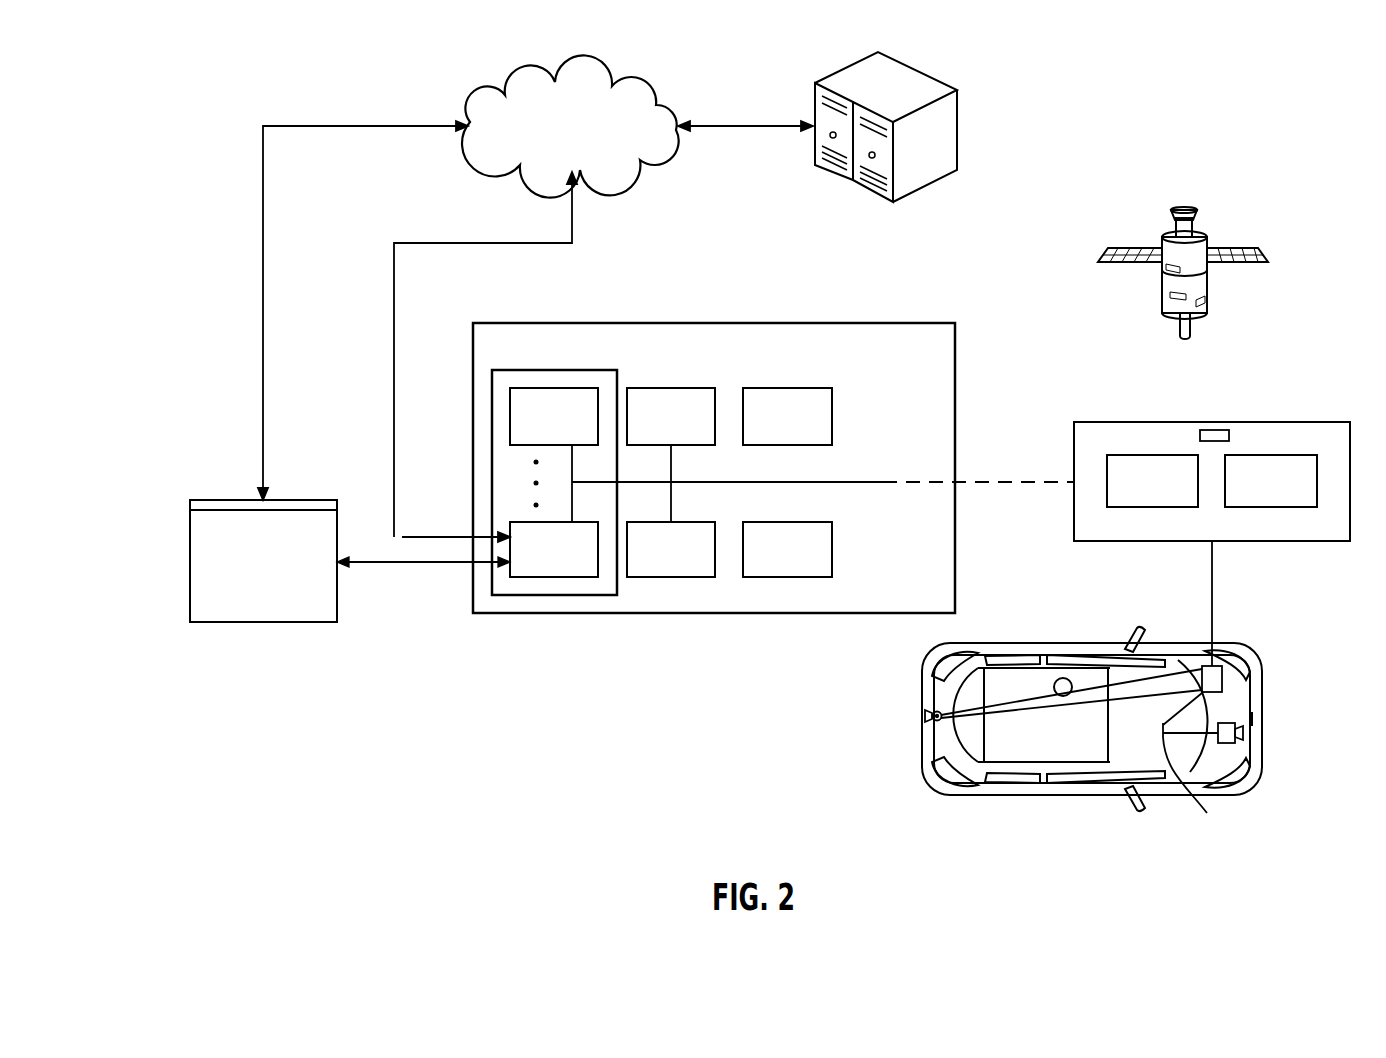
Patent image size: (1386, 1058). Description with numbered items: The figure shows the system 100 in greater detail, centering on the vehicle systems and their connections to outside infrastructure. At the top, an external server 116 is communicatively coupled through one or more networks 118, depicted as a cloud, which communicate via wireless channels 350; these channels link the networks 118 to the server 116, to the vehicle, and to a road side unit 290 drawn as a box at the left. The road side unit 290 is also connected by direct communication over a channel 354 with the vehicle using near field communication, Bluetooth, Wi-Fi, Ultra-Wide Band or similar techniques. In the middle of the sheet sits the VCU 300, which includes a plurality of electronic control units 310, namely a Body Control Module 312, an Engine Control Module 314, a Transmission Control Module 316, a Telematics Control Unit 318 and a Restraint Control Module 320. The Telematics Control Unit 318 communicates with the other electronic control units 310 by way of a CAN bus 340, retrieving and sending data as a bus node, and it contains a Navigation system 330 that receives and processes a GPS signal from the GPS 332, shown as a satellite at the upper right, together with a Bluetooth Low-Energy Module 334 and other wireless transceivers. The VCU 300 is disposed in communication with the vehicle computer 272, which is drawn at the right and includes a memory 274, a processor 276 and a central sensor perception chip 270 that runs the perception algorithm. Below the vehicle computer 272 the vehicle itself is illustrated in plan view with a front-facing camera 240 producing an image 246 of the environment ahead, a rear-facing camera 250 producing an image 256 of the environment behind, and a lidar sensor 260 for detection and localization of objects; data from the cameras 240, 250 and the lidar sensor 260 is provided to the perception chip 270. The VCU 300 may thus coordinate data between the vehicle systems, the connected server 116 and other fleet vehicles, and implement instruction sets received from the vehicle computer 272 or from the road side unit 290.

The system 100 is at (1087, 741).
The server 116 is at (962, 74).
The network 118 is at (596, 143).
The camera 240 is at (1246, 734).
The image 246 is at (1197, 772).
The camera 250 is at (932, 716).
The image 256 is at (948, 712).
The lidar sensor 260 is at (1063, 677).
The perception chip 270 is at (1216, 429).
The vehicle computer 272 is at (1212, 524).
The memory 274 is at (1293, 495).
The processor 276 is at (1175, 495).
The road side unit 290 is at (213, 558).
The VCU 300 is at (542, 322).
The electronic control units 310 is at (783, 462).
The Body Control Module 312 is at (694, 431).
The Engine Control Module 314 is at (810, 431).
The Transmission Control Module 316 is at (694, 565).
The Telematics Control Unit 318 is at (562, 369).
The Restraint Control Module 320 is at (810, 565).
The Navigation system 330 is at (577, 431).
The GPS 332 is at (1185, 196).
The Bluetooth Low-Energy Module 334 is at (577, 565).
The CAN bus 340 is at (848, 484).
The wireless channel 350 is at (348, 124).
The channel 354 is at (427, 566).